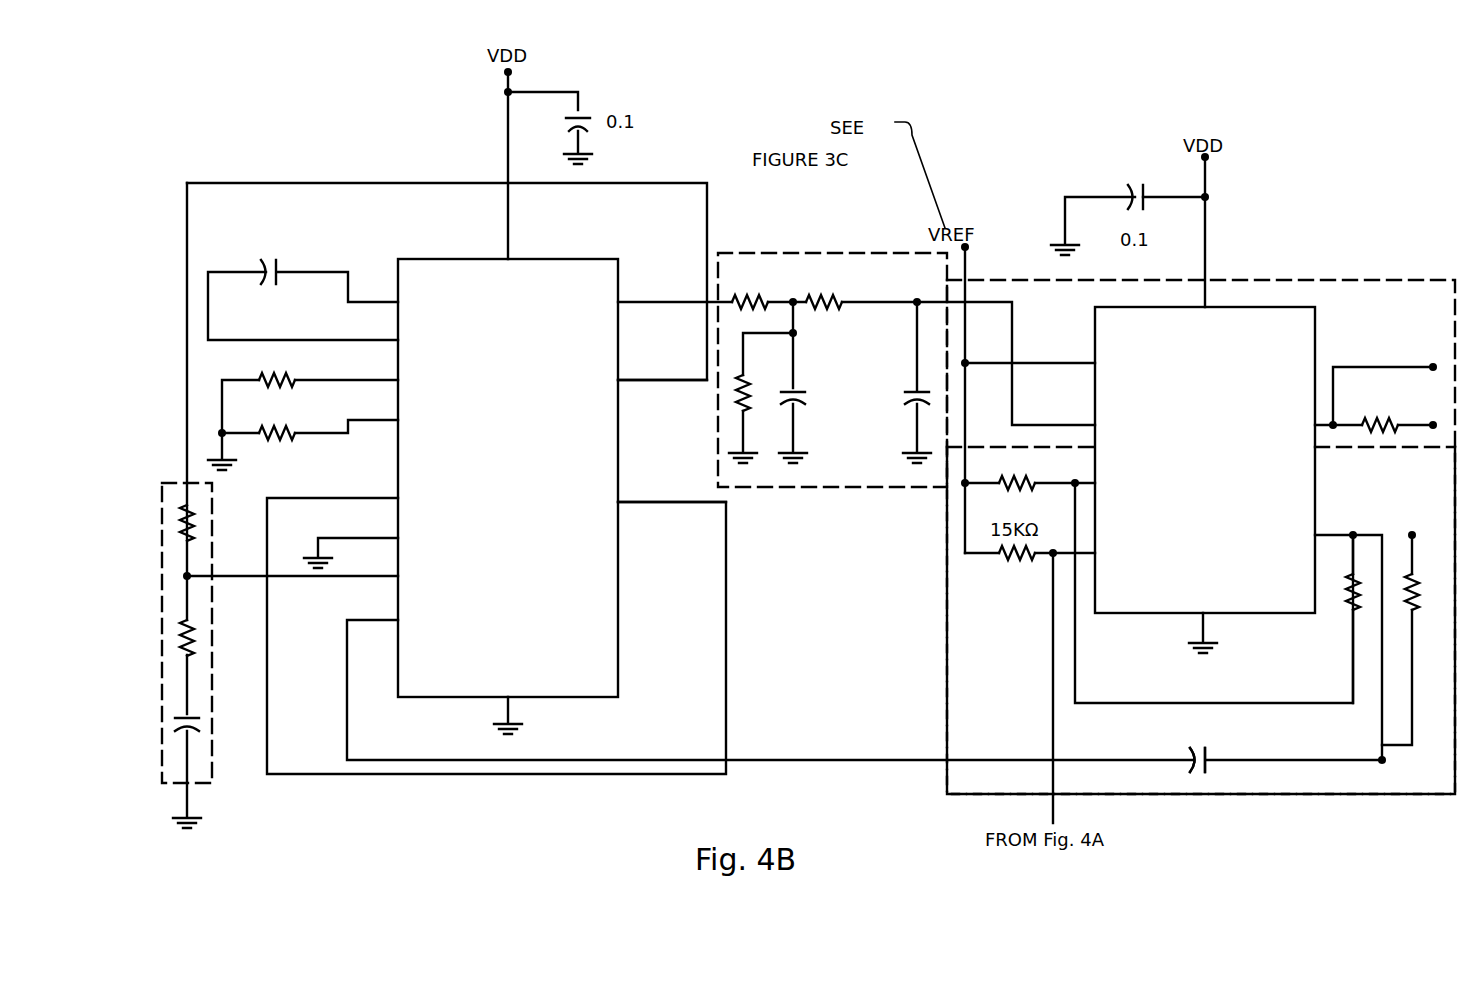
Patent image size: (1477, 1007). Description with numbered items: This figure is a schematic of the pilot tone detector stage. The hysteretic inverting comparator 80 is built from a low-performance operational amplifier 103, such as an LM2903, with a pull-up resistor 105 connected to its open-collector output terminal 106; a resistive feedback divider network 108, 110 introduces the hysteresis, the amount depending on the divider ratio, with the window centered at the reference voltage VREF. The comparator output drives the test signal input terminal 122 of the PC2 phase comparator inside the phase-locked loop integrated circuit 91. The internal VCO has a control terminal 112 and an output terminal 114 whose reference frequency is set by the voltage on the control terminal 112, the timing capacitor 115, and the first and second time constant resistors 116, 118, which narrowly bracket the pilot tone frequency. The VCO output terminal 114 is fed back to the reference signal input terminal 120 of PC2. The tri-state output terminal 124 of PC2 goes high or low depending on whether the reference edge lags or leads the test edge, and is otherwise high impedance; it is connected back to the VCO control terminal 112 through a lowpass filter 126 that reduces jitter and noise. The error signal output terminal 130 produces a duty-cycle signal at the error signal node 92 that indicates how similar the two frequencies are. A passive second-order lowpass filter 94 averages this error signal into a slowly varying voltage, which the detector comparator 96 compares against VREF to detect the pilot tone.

The hysteretic inverting comparator 80 is at (945, 682).
The phase-locked loop integrated circuit 91 is at (622, 632).
The error signal node 92 is at (715, 230).
The lowpass filter 94 is at (790, 250).
The detector comparator 96 is at (1363, 280).
The operational amplifier 103 is at (1228, 305).
The pull-up resistor 105 is at (1408, 574).
The open-collector output terminal 106 is at (1380, 760).
The resistive feedback divider network resistor 108 is at (1353, 612).
The resistive feedback divider network resistor 110 is at (1000, 485).
The VCO control terminal 112 is at (396, 580).
The VCO output terminal 114 is at (620, 505).
The timing capacitor 115 is at (276, 266).
The first time constant resistor 116 is at (299, 380).
The second time constant resistor 118 is at (272, 442).
The reference signal input terminal 120 is at (398, 496).
The test signal input terminal 122 is at (396, 622).
The tri-state output terminal 124 is at (620, 380).
The lowpass filter 126 is at (212, 762).
The error signal output terminal 130 is at (620, 300).